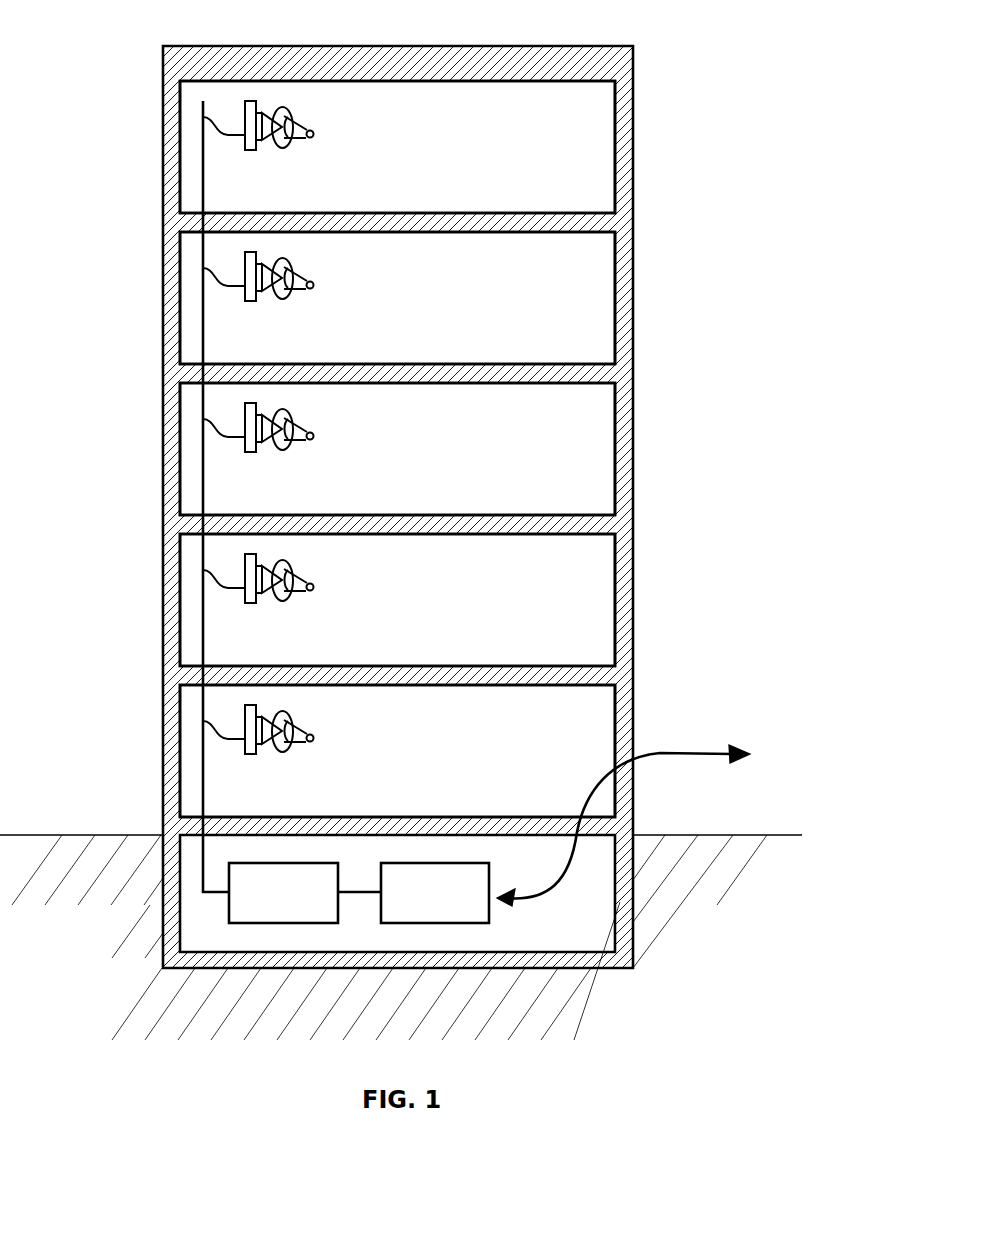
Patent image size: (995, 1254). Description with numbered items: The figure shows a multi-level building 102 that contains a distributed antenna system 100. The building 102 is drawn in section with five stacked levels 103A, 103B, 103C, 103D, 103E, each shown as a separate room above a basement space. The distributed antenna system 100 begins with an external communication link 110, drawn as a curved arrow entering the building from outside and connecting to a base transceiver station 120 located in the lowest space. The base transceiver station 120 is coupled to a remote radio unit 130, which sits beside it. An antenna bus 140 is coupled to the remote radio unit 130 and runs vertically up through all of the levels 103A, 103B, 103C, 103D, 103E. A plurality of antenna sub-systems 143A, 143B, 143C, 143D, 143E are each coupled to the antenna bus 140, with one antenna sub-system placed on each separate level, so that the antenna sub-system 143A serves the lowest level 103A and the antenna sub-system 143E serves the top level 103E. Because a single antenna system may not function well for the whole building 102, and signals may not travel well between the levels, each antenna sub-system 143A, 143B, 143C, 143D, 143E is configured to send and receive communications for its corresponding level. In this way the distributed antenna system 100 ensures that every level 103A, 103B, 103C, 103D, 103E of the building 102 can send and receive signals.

The distributed antenna system 100 is at (679, 1026).
The multi-level building 102 is at (163, 507).
The level 103A is at (582, 722).
The level 103B is at (582, 575).
The level 103C is at (582, 428).
The level 103D is at (582, 282).
The level 103E is at (582, 135).
The external communication link 110 is at (700, 750).
The base transceiver station 120 is at (435, 893).
The remote radio unit 130 is at (305, 893).
The antenna bus 140 is at (202, 180).
The antenna sub-system 143A is at (293, 714).
The antenna sub-system 143B is at (293, 563).
The antenna sub-system 143C is at (293, 412).
The antenna sub-system 143D is at (293, 261).
The antenna sub-system 143E is at (293, 110).